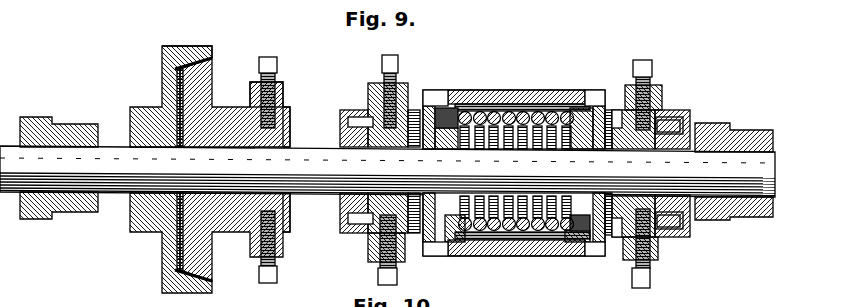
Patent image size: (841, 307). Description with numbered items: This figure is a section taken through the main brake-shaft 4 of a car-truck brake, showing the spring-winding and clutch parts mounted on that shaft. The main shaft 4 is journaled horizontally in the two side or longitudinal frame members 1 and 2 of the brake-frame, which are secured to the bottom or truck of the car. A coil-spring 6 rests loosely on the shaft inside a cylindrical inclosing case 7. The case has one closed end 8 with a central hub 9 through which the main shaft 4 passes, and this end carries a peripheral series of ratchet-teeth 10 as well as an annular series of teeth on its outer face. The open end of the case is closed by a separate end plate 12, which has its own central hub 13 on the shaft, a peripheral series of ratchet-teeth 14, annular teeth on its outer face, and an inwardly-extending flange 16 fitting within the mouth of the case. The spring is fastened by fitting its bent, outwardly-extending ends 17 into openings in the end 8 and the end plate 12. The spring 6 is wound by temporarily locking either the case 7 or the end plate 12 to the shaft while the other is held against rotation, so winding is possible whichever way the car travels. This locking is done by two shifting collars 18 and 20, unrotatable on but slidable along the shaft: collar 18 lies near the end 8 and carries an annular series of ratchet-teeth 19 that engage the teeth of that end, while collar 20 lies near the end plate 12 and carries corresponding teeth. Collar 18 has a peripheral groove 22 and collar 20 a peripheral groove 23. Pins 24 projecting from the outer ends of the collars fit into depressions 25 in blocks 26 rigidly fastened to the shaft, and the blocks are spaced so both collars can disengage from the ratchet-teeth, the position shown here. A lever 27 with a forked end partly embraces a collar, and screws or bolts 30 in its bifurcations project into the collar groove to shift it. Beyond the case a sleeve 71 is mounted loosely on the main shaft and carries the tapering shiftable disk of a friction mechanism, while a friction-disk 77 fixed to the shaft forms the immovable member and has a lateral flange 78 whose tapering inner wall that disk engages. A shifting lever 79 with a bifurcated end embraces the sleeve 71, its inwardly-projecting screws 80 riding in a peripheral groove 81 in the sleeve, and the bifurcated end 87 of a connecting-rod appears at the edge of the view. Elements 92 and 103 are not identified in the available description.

The side frame member 1 is at (42, 138).
The side frame member 2 is at (763, 133).
The main brake-shaft 4 is at (718, 173).
The coil-spring 6 is at (557, 226).
The inclosing case 7 is at (490, 256).
The closed end of inclosing case 8 is at (436, 256).
The central hub 9 is at (470, 117).
The peripheral series of ratchet-teeth 10 is at (436, 100).
The end plate 12 is at (652, 72).
The central hub 13 is at (588, 258).
The peripheral series of ratchet-teeth 14 is at (610, 102).
The inwardly-extending flange 16 is at (597, 100).
The bent outwardly-extending spring ends 17 is at (443, 117).
The shifting collar 18 is at (380, 276).
The annular series of ratchet-teeth 19 is at (413, 233).
The shifting collar 20 is at (660, 122).
The peripheral groove 22 is at (373, 122).
The peripheral groove 23 is at (658, 237).
The pins 24 is at (342, 110).
The depressions 25 is at (362, 122).
The blocks 26 is at (342, 205).
The lever 27 is at (373, 103).
The screws or bolts 30 is at (388, 67).
The sleeve 71 is at (286, 110).
The friction-disk 77 is at (162, 65).
The lateral flange 78 is at (213, 50).
The shifting lever 79 is at (258, 87).
The screws 80 is at (265, 72).
The peripheral groove 81 is at (257, 118).
The bifurcated extremity of connecting-rod 87 is at (208, 306).
The hub 92 is at (198, 255).
The lever 103 is at (115, 301).